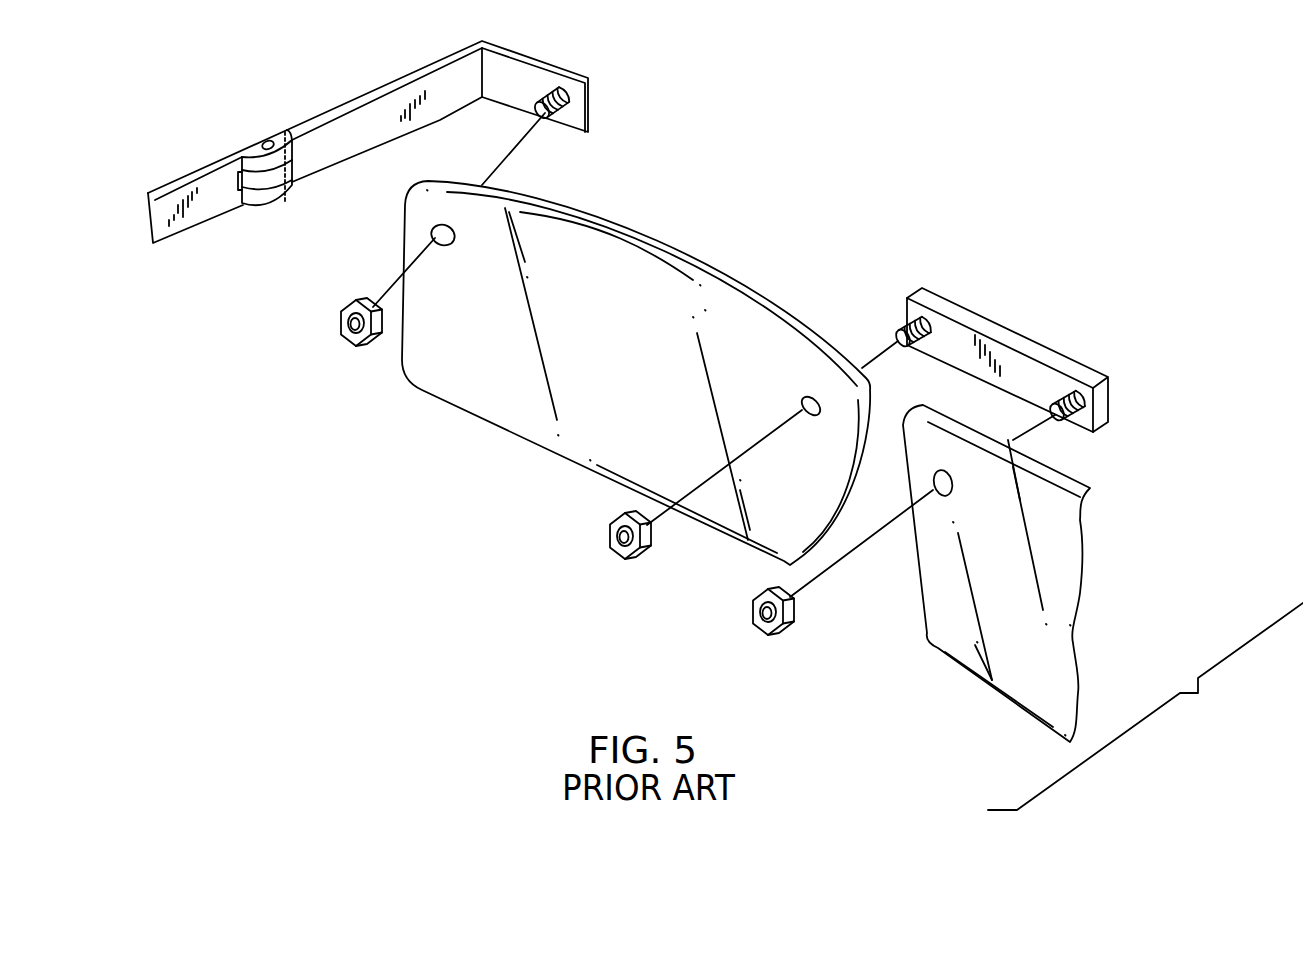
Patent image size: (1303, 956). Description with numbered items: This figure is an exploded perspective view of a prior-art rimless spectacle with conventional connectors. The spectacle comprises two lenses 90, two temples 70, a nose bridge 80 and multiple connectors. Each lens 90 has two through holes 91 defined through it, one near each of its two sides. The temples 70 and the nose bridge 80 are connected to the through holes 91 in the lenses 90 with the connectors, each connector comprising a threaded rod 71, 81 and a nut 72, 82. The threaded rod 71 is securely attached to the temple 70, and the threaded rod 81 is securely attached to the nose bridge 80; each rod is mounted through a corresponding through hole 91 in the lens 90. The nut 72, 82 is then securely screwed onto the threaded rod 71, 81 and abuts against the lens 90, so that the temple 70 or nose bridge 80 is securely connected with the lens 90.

The temple 70 is at (327, 81).
The threaded rod 71 is at (567, 110).
The nut 72 is at (357, 340).
The nose bridge 80 is at (1013, 335).
The threaded rod 81 is at (922, 322).
The nut 82 is at (625, 557).
The lens 90 is at (636, 373).
The through hole 91 is at (447, 245).